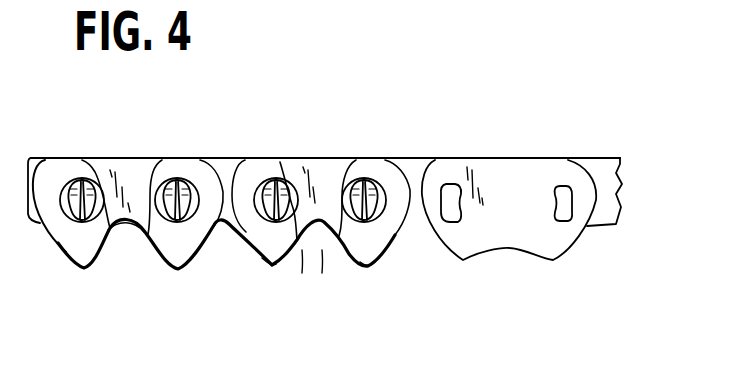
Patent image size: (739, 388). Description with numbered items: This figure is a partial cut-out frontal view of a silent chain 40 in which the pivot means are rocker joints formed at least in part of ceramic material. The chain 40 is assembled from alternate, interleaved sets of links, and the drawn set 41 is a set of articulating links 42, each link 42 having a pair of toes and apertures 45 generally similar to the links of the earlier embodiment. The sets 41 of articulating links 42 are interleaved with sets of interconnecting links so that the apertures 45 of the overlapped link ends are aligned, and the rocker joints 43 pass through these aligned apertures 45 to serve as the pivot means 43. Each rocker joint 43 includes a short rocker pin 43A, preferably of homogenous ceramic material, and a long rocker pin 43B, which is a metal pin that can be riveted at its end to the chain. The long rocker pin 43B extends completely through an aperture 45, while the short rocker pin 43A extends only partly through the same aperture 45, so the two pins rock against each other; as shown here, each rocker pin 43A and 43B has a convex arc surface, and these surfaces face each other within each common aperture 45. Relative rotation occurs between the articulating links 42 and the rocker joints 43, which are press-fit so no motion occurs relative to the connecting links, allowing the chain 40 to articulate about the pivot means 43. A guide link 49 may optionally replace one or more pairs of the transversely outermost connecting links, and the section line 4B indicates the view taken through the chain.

The silent chain 40 is at (293, 123).
The set of articulating links 41 is at (271, 268).
The articulating link 42 is at (79, 172).
The rocker joint 43 is at (73, 231).
The short rocker pin 43A is at (263, 181).
The long rocker pin 43B is at (298, 281).
The aperture 45 is at (176, 178).
The guide link 49 is at (503, 171).
The section line 4B is at (169, 243).